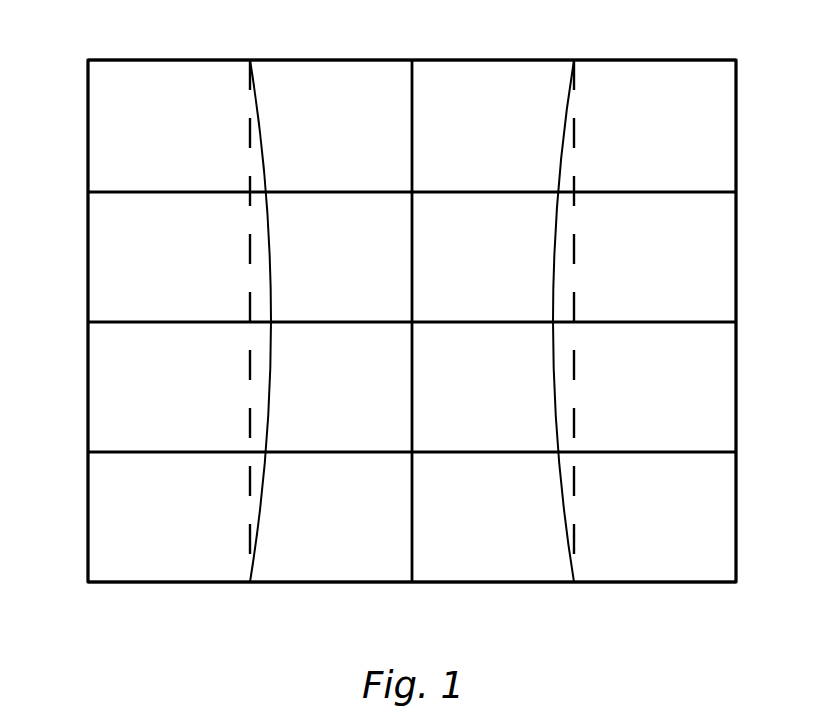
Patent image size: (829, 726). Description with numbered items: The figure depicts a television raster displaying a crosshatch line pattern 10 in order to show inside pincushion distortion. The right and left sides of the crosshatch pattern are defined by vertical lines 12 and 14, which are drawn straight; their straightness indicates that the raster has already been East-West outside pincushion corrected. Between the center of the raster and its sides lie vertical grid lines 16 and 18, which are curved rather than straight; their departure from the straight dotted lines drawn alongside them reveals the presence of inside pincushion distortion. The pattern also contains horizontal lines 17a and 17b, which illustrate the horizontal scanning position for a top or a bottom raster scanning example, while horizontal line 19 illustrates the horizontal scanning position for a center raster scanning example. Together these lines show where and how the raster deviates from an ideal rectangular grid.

The crosshatch line pattern 10 is at (68, 102).
The vertical line 12 is at (736, 400).
The vertical line 14 is at (87, 393).
The vertical grid line 16 is at (565, 115).
The horizontal line 17a is at (648, 60).
The horizontal line 17b is at (642, 582).
The vertical grid line 18 is at (260, 123).
The horizontal line 19 is at (645, 322).